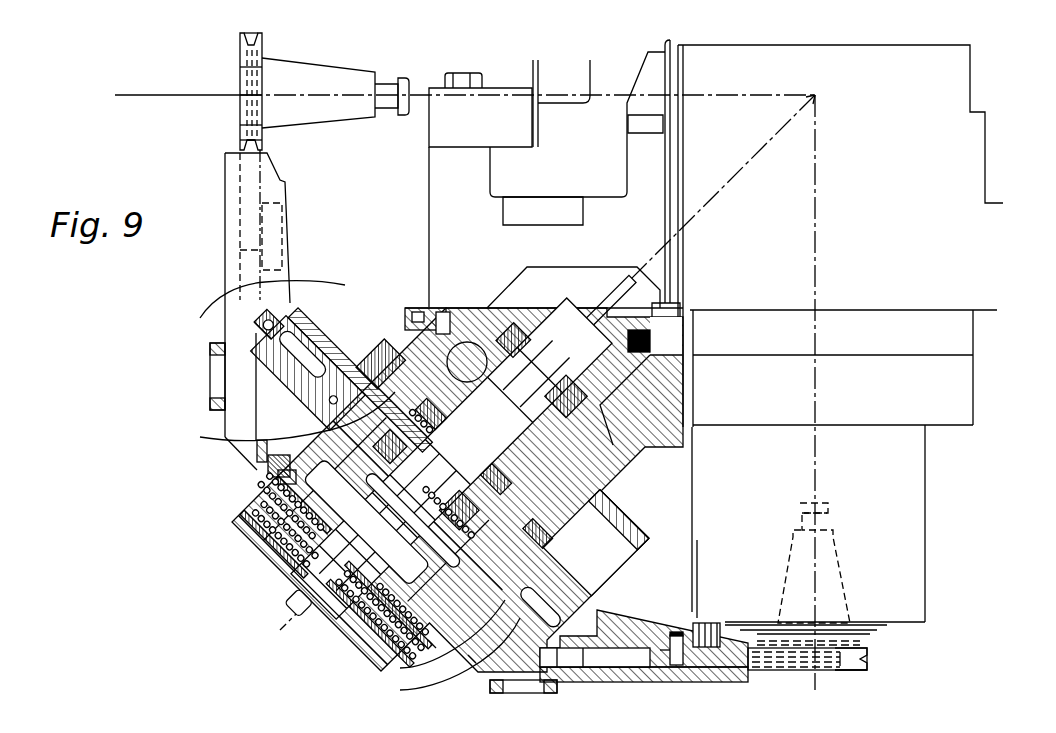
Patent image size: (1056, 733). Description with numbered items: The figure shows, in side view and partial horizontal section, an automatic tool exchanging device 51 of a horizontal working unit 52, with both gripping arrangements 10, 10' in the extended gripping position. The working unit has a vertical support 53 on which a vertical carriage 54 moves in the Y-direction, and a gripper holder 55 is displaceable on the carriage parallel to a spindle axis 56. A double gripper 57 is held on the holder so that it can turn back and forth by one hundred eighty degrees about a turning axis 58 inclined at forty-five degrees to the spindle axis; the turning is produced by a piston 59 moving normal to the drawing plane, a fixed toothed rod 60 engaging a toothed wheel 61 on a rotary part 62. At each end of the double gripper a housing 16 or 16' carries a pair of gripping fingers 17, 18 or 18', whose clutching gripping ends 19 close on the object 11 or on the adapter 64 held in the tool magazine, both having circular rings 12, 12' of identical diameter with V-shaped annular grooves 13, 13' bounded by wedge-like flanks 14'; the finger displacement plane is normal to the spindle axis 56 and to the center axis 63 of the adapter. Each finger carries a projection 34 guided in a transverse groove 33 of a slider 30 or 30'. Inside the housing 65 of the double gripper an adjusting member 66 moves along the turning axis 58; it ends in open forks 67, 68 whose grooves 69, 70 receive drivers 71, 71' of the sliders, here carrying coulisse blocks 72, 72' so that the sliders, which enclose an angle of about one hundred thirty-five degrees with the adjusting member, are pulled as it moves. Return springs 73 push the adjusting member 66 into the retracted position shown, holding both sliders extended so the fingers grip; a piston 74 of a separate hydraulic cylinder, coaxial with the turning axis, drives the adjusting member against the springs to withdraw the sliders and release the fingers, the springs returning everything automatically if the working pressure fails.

The gripping arrangement 10 is at (619, 635).
The gripping arrangement 10' is at (171, 102).
The object 11 is at (840, 572).
The circular ring 12 is at (925, 639).
The circular ring 12' is at (278, 91).
The annular groove 13 is at (930, 612).
The annular groove 13' is at (225, 45).
The lateral flank 14' is at (213, 132).
The housing 16 is at (717, 527).
The housing 16' is at (220, 295).
The gripping finger 17 is at (745, 650).
The gripping finger 18 is at (807, 672).
The gripping finger 18' is at (296, 149).
The clutching gripping end 19 is at (850, 676).
The slider 30 is at (674, 581).
The slider 30' is at (308, 225).
The groove 33 is at (700, 623).
The projection 34 is at (690, 635).
The automatic tool exchanging device 51 is at (238, 555).
The horizontal working unit 52 is at (910, 195).
The vertical support 53 is at (595, 155).
The vertical carriage 54 is at (554, 255).
The gripper holder 55 is at (692, 392).
The spindle axis 56 is at (817, 470).
The double gripper 57 is at (337, 348).
The turning axis 58 is at (290, 606).
The piston 59 is at (420, 312).
The toothed rod 60 is at (436, 312).
The toothed wheel 61 is at (608, 443).
The rotary part 62 is at (592, 466).
The center axis 63 is at (238, 93).
The adapter 64 is at (352, 108).
The housing 65 is at (258, 455).
The adjusting member 66 is at (290, 392).
The open fork 67 is at (470, 660).
The open fork 68 is at (305, 308).
The groove 69 is at (432, 646).
The groove 70 is at (297, 363).
The driver 71 is at (581, 573).
The driver 71' is at (216, 303).
The coulisse block 72 is at (590, 601).
The coulisse block 72' is at (209, 321).
The return spring 73 is at (286, 560).
The piston 74 is at (487, 335).